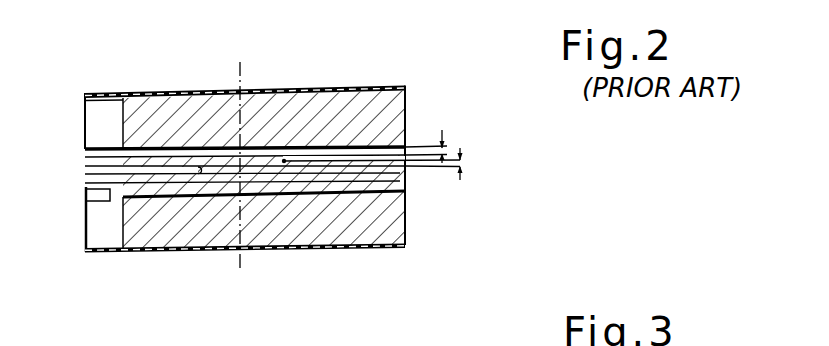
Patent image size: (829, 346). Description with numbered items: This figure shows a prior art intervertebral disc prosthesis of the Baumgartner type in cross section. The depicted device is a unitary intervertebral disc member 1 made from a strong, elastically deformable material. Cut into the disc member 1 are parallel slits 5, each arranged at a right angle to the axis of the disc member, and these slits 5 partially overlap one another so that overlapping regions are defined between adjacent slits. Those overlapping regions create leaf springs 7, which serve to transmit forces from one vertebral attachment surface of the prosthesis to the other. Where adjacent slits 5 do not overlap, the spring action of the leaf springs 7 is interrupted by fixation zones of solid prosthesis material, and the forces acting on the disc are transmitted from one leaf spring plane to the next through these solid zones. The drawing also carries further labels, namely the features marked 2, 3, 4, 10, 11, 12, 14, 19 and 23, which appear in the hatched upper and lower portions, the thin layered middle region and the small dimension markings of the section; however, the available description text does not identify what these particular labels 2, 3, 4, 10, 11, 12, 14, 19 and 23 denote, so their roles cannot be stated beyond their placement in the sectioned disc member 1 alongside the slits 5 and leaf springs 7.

The intervertebral disc member 1 is at (382, 115).
The top cover plate 2 is at (377, 86).
The bottom cover plate 3 is at (378, 248).
The lower body 4 is at (383, 214).
The parallel slits 5 is at (398, 175).
The leaf springs 7 is at (168, 148).
The gap 10 is at (443, 146).
The gap 11 is at (466, 160).
The bottom layer 12 is at (320, 250).
The slot 14 is at (85, 174).
The top plate layer 19 is at (295, 88).
The inner surface 23 is at (220, 95).